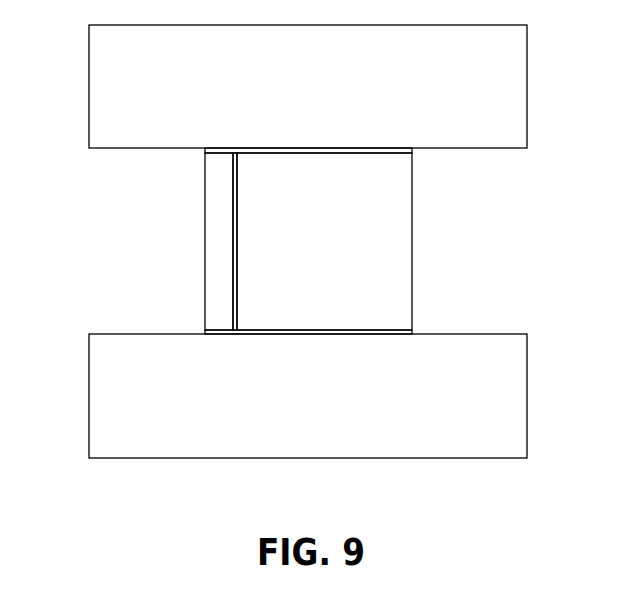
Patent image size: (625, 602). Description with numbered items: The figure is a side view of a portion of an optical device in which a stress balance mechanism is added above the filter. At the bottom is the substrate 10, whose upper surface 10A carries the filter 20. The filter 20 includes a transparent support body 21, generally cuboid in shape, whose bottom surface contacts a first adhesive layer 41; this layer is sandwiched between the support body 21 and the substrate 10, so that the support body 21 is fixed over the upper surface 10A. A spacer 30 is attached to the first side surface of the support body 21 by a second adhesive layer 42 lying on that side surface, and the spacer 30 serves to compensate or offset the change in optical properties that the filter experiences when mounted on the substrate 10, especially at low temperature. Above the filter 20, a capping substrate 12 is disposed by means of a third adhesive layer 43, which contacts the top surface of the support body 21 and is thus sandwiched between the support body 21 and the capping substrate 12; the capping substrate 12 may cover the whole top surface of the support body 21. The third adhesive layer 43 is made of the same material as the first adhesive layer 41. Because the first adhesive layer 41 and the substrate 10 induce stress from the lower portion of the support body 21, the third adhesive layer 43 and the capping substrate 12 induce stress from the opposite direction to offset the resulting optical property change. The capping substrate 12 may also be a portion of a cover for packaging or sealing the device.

The substrate 10 is at (477, 406).
The capping substrate 12 is at (482, 100).
The upper surface 10A is at (502, 316).
The filter 20 is at (477, 316).
The support body 21 is at (338, 255).
The spacer 30 is at (223, 289).
The first adhesive layer 41 is at (252, 331).
The second adhesive layer 42 is at (237, 217).
The third adhesive layer 43 is at (252, 148).